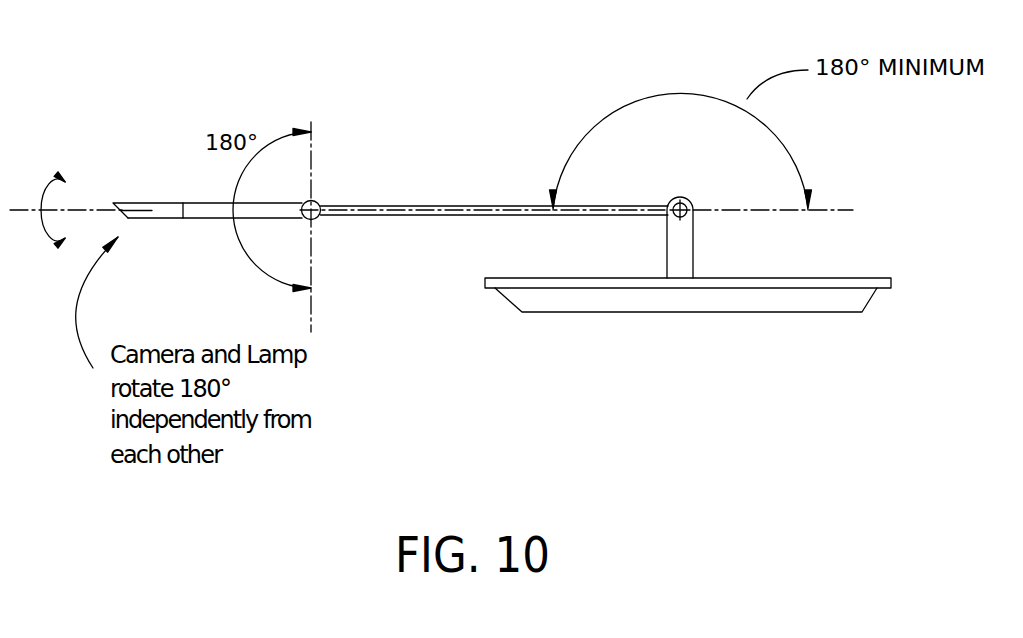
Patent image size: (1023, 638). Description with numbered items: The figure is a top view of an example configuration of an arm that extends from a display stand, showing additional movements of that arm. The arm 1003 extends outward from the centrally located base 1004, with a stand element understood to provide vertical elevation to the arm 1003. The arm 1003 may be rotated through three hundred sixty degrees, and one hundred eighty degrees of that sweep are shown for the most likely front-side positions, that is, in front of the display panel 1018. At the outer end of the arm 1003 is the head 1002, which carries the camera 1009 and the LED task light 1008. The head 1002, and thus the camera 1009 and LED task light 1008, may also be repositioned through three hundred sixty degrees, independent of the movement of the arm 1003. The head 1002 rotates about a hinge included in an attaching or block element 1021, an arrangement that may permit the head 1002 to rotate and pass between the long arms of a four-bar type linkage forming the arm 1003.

The head 1002 is at (188, 143).
The camera 1009 is at (155, 203).
The LED task light 1008 is at (250, 216).
The attaching or block element 1021 is at (316, 199).
The arm 1003 is at (390, 204).
The base 1004 is at (692, 196).
The display panel 1018 is at (773, 312).